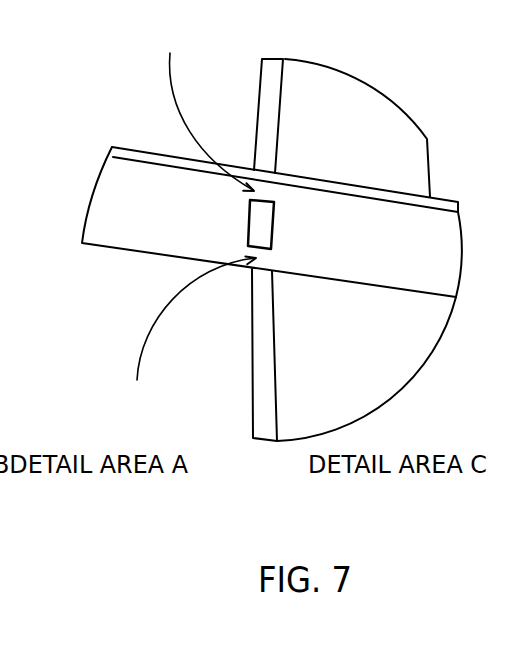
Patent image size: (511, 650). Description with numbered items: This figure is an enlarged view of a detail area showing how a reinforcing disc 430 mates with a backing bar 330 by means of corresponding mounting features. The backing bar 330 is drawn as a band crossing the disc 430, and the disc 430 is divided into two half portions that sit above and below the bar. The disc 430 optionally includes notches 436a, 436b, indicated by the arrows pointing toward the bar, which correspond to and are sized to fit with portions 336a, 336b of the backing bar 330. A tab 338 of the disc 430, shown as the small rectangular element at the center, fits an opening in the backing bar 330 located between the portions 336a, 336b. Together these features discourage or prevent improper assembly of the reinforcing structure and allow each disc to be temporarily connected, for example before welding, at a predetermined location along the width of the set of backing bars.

The backing bar 330 is at (137, 158).
The first portion of backing bar 336a is at (270, 193).
The second portion of backing bar 336b is at (263, 257).
The tab 338 is at (260, 217).
The disc 430 is at (255, 377).
The first notch 436a is at (211, 111).
The second notch 436b is at (186, 330).